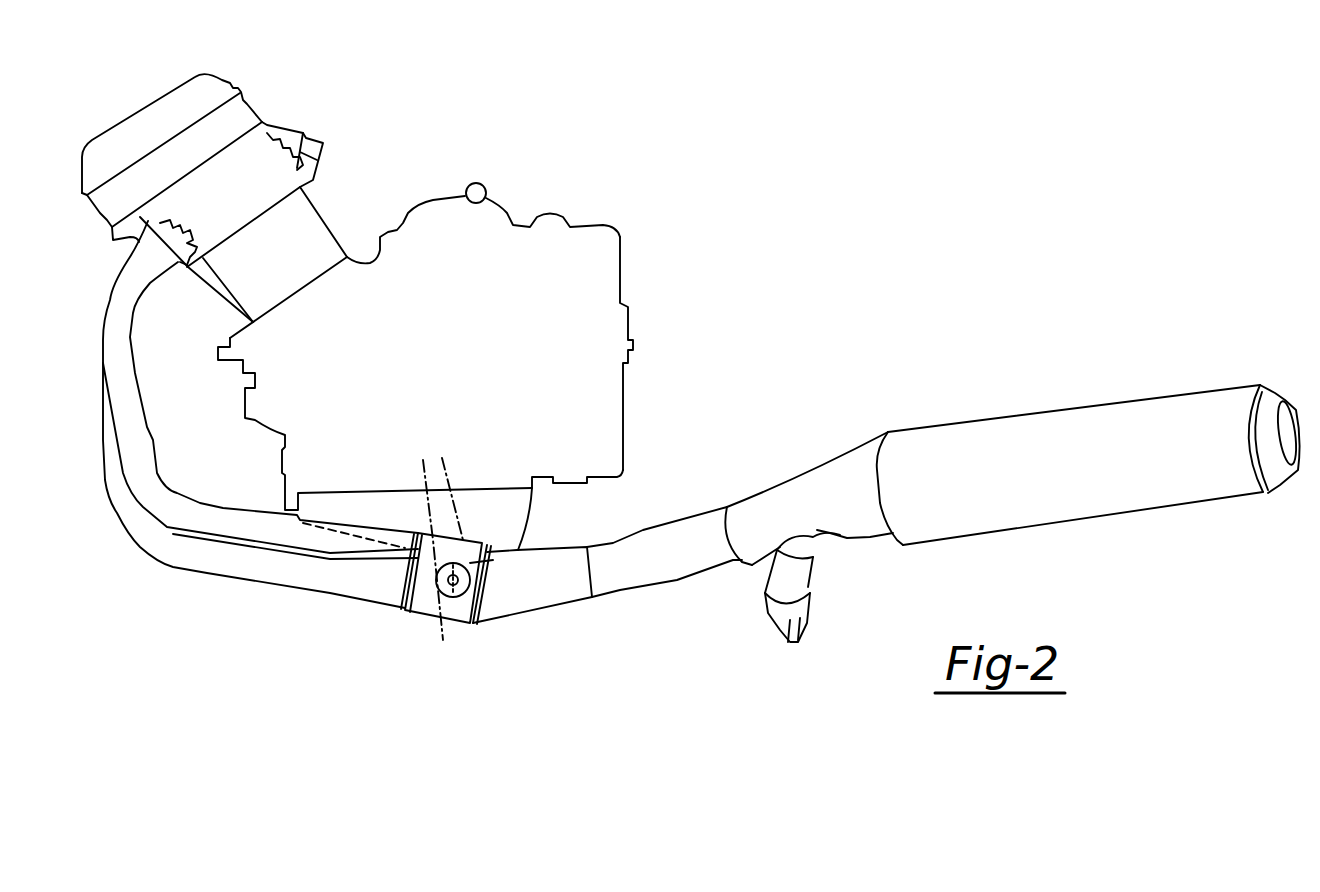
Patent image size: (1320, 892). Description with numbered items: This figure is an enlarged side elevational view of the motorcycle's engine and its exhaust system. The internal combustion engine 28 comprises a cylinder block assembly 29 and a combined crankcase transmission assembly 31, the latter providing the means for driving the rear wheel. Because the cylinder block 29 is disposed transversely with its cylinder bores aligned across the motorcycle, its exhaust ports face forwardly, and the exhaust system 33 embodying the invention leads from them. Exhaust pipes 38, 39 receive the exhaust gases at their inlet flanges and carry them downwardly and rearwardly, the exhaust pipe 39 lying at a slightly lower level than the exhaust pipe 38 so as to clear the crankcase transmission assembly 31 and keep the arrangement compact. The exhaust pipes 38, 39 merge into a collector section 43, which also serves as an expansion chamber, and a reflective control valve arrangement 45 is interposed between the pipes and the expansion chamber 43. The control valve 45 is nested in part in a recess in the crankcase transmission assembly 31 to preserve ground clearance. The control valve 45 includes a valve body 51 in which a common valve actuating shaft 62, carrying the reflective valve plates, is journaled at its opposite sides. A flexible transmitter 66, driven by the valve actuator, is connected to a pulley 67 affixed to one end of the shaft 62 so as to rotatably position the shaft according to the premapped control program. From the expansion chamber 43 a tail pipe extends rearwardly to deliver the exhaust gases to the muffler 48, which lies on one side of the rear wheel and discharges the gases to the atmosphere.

The internal combustion engine 28 is at (633, 232).
The cylinder block assembly 29 is at (327, 218).
The crankcase transmission assembly 31 is at (623, 397).
The exhaust system 33 is at (335, 617).
The exhaust pipe 38 is at (167, 527).
The exhaust pipe 39 is at (205, 573).
The collector section 43 is at (560, 603).
The reflective control valve arrangement 45 is at (410, 626).
The muffler 48 is at (953, 425).
The valve body 51 is at (430, 617).
The valve actuating shaft 62 is at (448, 592).
The flexible transmitter 66 is at (448, 482).
The pulley 67 is at (493, 560).